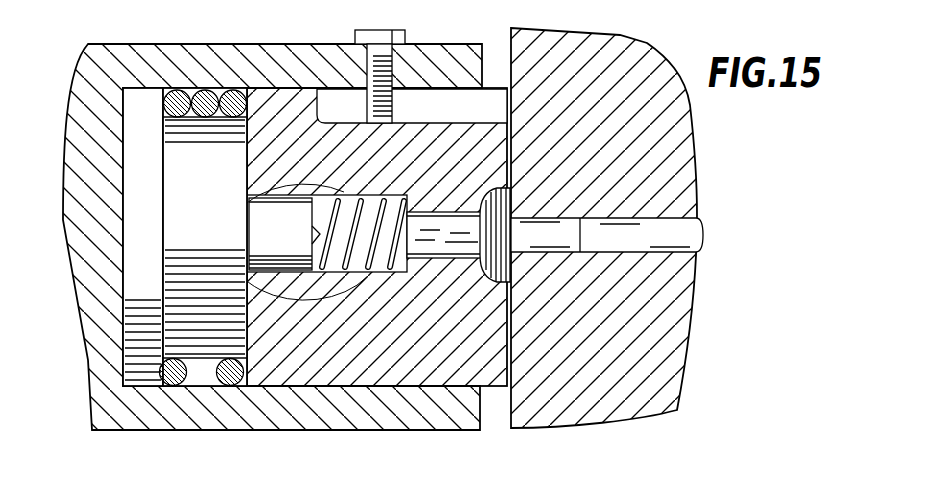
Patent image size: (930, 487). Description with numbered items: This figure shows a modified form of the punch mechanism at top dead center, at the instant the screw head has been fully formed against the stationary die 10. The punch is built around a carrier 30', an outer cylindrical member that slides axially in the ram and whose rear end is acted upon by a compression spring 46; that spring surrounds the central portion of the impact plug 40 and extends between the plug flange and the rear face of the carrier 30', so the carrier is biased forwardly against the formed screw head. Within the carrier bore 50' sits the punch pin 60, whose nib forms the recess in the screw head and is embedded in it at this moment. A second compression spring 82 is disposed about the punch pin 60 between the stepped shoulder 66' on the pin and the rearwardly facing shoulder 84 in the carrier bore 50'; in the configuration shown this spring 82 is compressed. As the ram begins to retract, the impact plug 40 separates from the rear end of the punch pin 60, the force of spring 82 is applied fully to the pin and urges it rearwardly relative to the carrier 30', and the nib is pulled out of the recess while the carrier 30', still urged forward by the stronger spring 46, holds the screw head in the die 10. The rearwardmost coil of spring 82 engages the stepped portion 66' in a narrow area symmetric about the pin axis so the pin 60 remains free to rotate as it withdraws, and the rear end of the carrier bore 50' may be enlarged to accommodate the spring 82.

The stationary die 10 is at (583, 50).
The carrier 30' is at (377, 199).
The impact plug 40 is at (205, 214).
The compression spring 46 is at (232, 88).
The carrier bore 50' is at (377, 184).
The punch pin 60 is at (247, 275).
The stepped shoulder 66' is at (284, 234).
The compression spring 82 is at (250, 191).
The rearwardly facing shoulder 84 is at (397, 194).